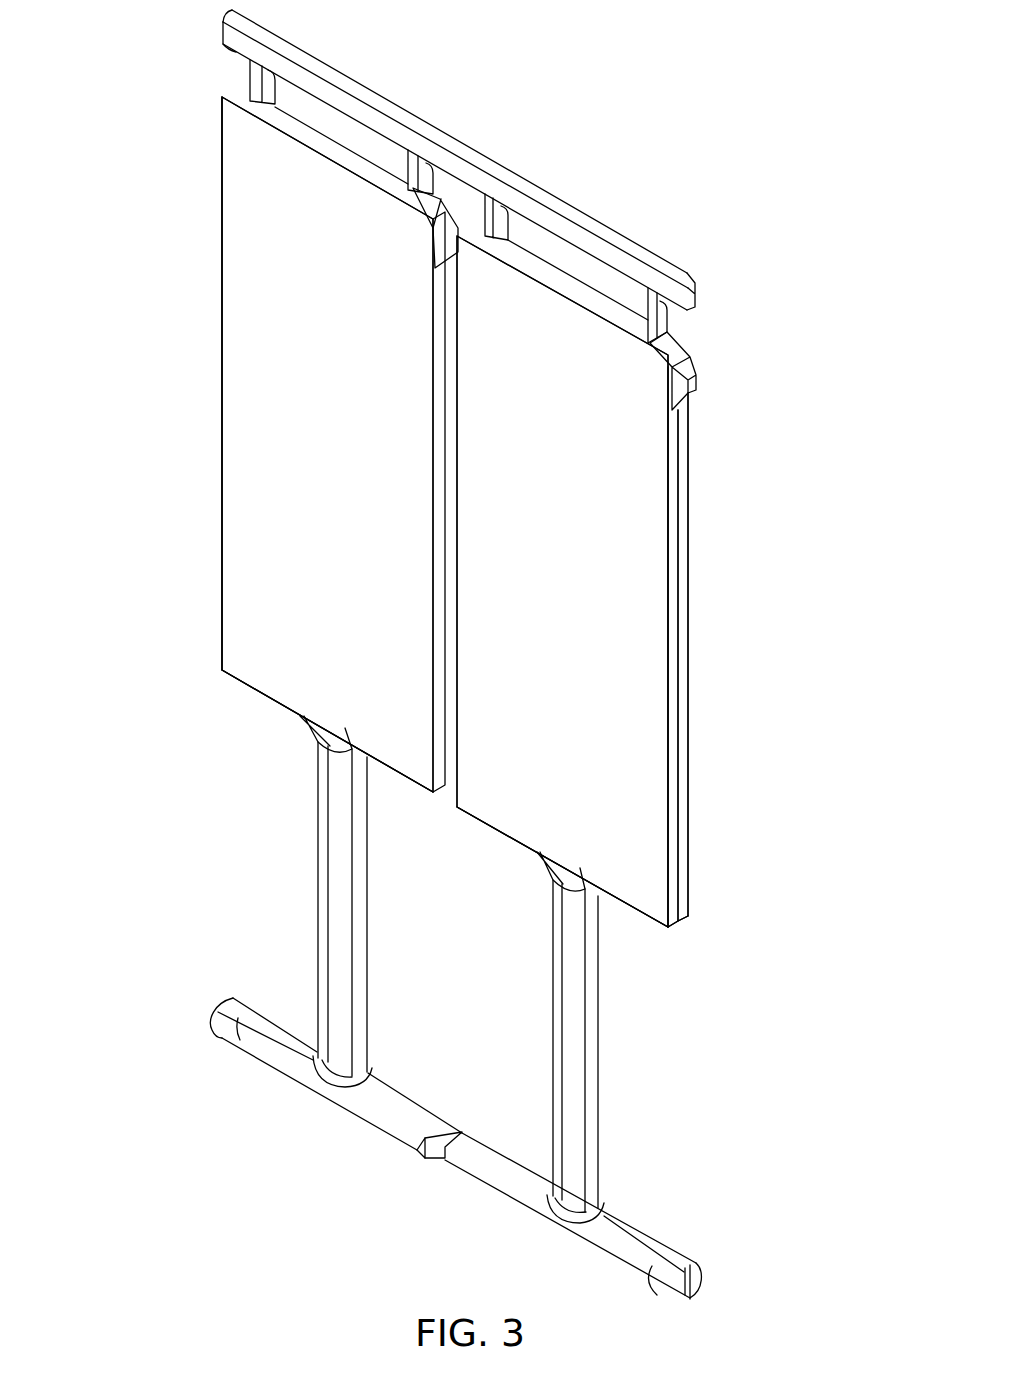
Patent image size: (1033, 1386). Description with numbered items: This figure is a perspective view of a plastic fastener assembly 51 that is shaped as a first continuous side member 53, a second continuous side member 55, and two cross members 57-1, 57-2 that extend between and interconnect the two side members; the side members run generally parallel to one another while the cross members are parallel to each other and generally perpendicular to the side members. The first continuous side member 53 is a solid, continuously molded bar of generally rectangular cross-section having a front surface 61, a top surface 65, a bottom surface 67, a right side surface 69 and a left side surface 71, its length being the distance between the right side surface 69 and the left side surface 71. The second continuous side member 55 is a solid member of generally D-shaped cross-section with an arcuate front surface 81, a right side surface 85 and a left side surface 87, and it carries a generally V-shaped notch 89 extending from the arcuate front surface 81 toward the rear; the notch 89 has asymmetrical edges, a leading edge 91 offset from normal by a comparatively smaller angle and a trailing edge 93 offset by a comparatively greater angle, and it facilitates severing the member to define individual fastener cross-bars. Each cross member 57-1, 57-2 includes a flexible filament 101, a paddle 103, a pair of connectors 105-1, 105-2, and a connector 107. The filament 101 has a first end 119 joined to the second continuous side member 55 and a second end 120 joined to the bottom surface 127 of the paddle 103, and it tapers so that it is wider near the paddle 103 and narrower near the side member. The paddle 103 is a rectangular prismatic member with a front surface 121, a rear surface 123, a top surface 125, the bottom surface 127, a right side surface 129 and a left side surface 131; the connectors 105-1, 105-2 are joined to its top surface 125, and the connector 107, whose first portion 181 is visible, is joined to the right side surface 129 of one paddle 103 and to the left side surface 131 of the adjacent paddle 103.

The plastic fastener assembly 51 is at (446, 650).
The first continuous side member 53 is at (462, 155).
The second continuous side member 55 is at (469, 1128).
The cross member 57-1 is at (176, 536).
The cross member 57-2 is at (707, 699).
The front surface 61 is at (575, 227).
The top surface 65 is at (298, 52).
The bottom surface 67 is at (244, 72).
The right side surface 69 is at (700, 290).
The left side surface 71 is at (231, 22).
The arcuate front surface 81 is at (595, 1245).
The right side surface 85 is at (700, 1282).
The left side surface 87 is at (225, 1012).
The notch 89 is at (429, 1123).
The leading edge 91 is at (417, 1155).
The trailing edge 93 is at (446, 1170).
The flexible filament 101 is at (299, 879).
The paddle 103 is at (446, 512).
The connector 105-1 is at (250, 82).
The connector 105-2 is at (410, 200).
The connector 107 is at (543, 263).
The first end 119 is at (345, 1080).
The second end 120 is at (304, 742).
The front surface 121 is at (250, 428).
The rear surface 123 is at (690, 612).
The top surface 125 is at (345, 140).
The bottom surface 127 is at (253, 689).
The right side surface 129 is at (688, 888).
The left side surface 131 is at (220, 620).
The first portion 181 is at (437, 258).